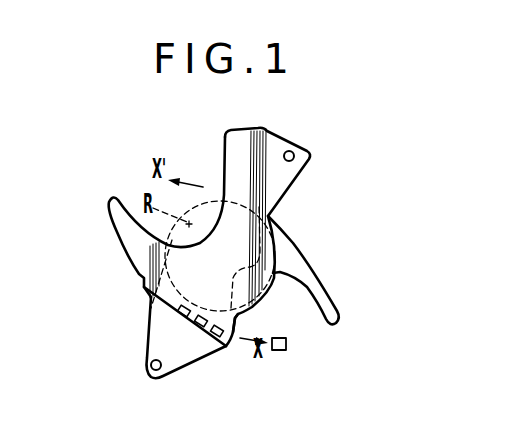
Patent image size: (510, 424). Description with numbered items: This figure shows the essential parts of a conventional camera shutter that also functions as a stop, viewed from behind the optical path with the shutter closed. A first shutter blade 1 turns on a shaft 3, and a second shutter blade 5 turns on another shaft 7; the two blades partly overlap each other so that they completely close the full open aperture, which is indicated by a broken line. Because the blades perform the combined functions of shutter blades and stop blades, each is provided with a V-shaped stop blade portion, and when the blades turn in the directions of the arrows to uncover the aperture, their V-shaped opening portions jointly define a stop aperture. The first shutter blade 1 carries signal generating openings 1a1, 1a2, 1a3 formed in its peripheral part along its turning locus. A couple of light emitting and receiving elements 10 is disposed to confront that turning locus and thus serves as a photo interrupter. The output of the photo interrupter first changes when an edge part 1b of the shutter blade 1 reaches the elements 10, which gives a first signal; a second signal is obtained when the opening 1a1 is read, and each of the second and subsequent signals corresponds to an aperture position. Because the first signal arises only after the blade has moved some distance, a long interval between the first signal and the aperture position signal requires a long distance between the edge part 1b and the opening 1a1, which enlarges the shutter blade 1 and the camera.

The first shutter blade 1 is at (223, 152).
The shaft 3 is at (291, 151).
The second shutter blade 5 is at (157, 326).
The shaft 7 is at (146, 375).
The signal generating opening 1a1 is at (223, 346).
The signal generating opening 1a2 is at (203, 328).
The signal generating opening 1a3 is at (187, 306).
The edge part 1b is at (237, 322).
The light emitting and receiving elements 10 is at (283, 337).